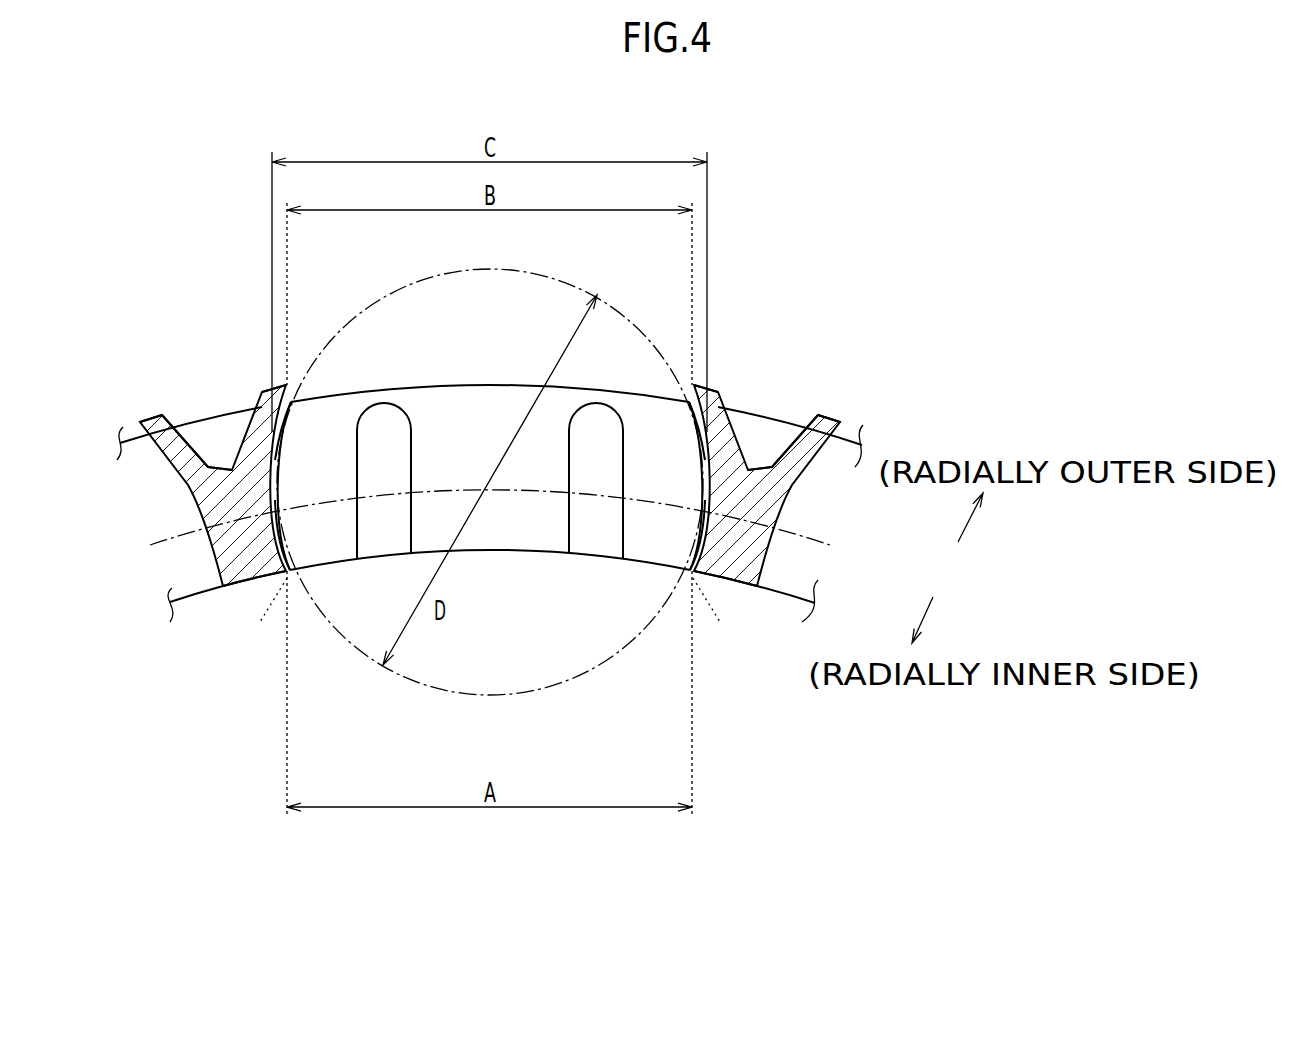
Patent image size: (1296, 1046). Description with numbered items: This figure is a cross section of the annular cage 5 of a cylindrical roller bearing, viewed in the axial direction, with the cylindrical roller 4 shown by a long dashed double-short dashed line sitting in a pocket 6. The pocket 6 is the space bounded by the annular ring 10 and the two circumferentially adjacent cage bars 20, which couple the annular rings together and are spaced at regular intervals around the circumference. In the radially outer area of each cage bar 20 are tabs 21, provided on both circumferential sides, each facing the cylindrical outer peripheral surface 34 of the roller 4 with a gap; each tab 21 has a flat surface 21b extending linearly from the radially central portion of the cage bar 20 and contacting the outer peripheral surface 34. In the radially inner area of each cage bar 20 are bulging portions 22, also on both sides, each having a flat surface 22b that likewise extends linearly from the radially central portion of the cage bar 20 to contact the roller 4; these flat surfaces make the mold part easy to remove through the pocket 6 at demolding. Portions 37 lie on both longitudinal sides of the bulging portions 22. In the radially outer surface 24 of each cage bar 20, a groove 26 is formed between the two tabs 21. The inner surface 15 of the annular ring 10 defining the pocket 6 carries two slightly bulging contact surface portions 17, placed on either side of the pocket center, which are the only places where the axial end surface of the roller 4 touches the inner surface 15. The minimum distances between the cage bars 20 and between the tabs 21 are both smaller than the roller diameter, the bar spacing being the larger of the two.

The roller 4 is at (533, 657).
The cage 5 is at (859, 417).
The pocket 6 is at (496, 518).
The annular ring 10 is at (780, 592).
The inner surface 15 is at (462, 400).
The contact surface portion 17 is at (387, 420).
The cage bar 20 is at (214, 500).
The tab 21 is at (165, 414).
The flat surface 21b is at (291, 432).
The bulging portion 22 is at (283, 560).
The flat surface 22b is at (284, 548).
The radially outer surface 24 is at (238, 460).
The groove 26 is at (220, 450).
The outer peripheral surface 34 is at (438, 695).
The portion 37 is at (489, 617).